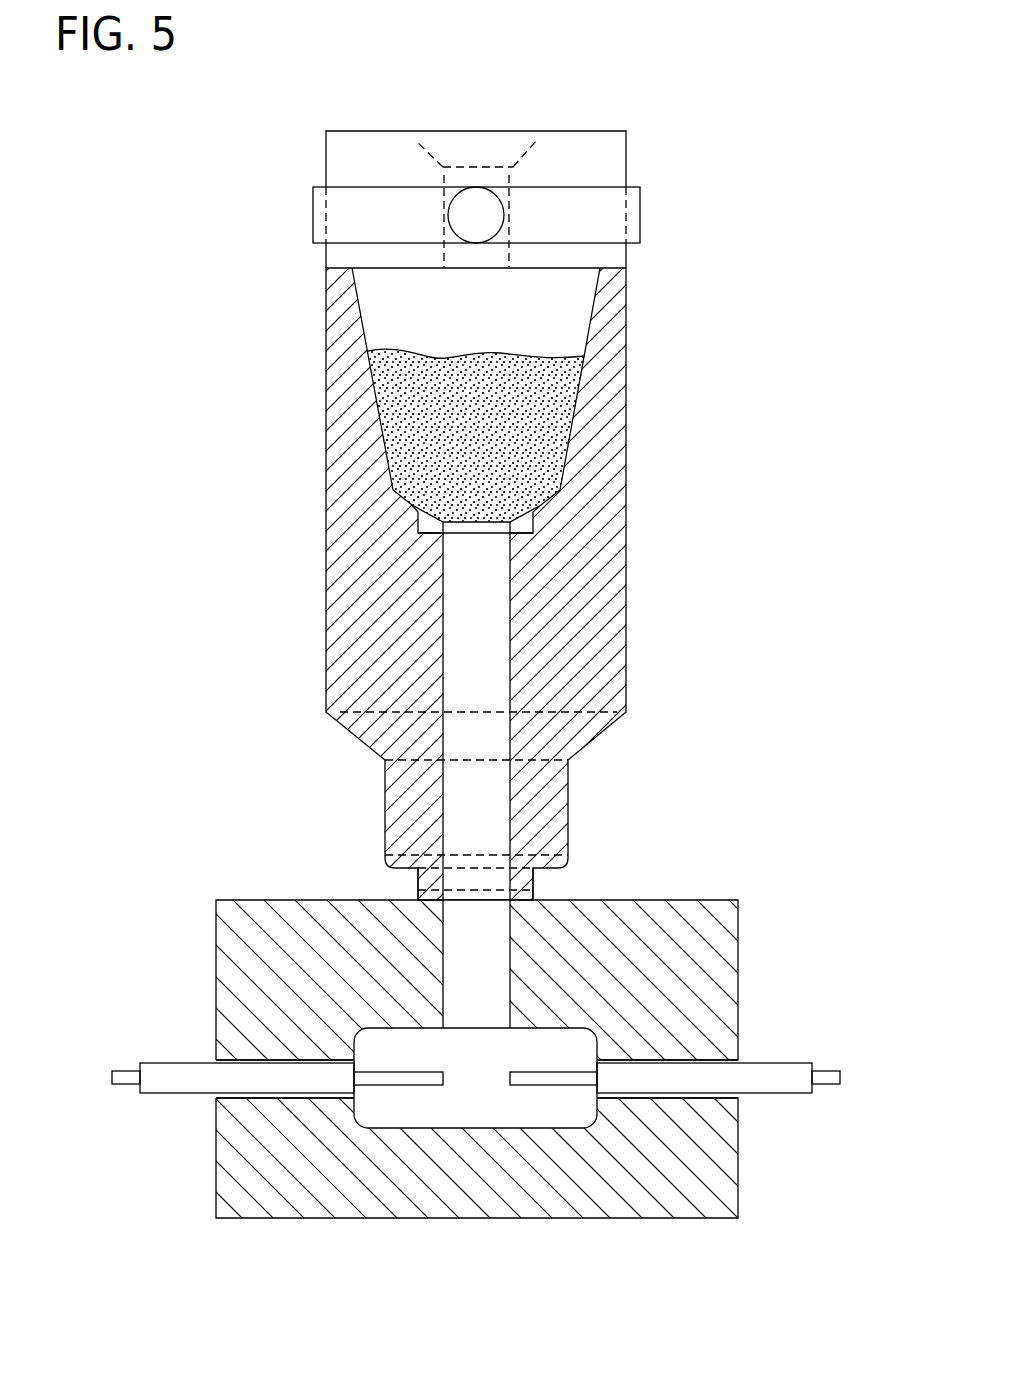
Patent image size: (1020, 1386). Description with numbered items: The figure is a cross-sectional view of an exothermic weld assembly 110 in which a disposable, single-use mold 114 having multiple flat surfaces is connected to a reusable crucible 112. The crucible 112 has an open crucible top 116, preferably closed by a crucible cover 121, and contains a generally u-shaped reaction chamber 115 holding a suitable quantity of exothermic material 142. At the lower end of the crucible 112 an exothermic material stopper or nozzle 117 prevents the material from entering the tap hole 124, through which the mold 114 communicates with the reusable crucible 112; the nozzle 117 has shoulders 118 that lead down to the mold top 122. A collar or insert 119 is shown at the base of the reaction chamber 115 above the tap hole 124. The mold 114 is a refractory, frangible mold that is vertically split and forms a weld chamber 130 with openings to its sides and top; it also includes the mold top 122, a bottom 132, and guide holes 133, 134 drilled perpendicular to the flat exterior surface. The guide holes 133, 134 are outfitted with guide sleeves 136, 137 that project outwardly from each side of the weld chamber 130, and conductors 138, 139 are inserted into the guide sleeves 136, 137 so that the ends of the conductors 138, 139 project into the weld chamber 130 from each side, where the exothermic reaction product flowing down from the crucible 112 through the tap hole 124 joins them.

The exothermic weld assembly 110 is at (748, 497).
The reusable crucible 112 is at (665, 304).
The mold 114 is at (762, 1249).
The reaction chamber 115 is at (575, 418).
The crucible top 116 is at (472, 167).
The nozzle 117 is at (418, 883).
The shoulders 118 is at (533, 883).
The collar insert 119 is at (476, 542).
The crucible cover 121 is at (608, 163).
The mold top 122 is at (668, 900).
The tap hole 124 is at (490, 668).
The weld chamber 130 is at (474, 1076).
The bottom 132 is at (292, 1218).
The guide hole 133 is at (710, 1058).
The guide hole 134 is at (240, 1058).
The guide sleeve 136 is at (768, 1095).
The guide sleeve 137 is at (182, 1095).
The conductor 138 is at (820, 1088).
The conductor 139 is at (128, 1088).
The exothermic material 142 is at (393, 410).